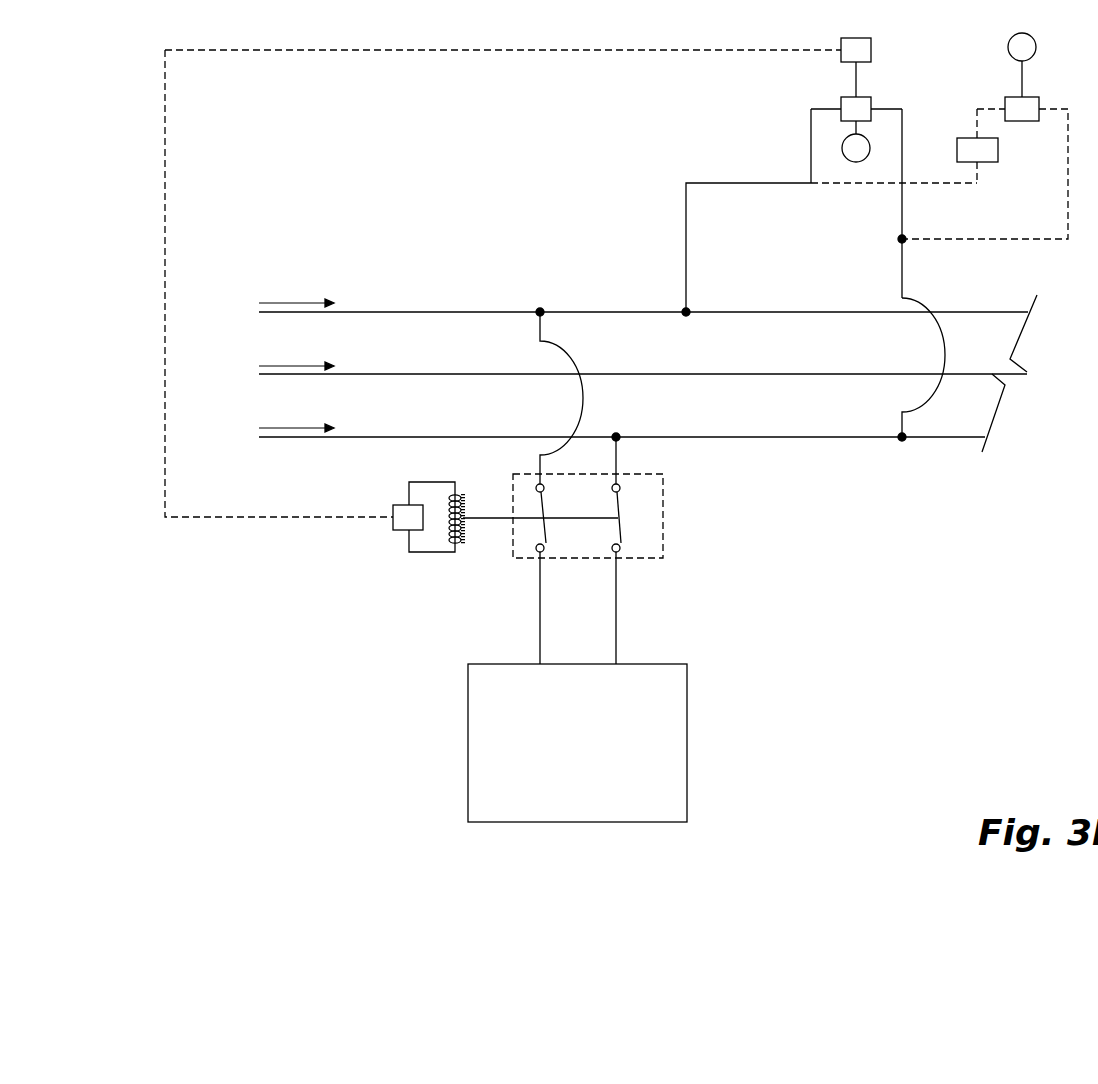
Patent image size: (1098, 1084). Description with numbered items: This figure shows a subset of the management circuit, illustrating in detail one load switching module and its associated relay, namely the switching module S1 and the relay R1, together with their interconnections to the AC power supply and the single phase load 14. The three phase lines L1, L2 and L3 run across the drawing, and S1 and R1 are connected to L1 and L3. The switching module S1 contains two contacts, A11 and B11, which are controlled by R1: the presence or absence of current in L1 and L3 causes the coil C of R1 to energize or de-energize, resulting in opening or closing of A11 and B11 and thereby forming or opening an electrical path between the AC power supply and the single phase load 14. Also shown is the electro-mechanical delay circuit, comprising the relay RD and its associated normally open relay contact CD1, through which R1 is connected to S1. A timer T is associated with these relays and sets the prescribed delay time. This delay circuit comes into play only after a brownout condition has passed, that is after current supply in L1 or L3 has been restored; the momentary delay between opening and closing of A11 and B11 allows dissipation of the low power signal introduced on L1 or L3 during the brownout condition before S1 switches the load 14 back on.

The phase line L1 is at (631, 305).
The phase line L2 is at (630, 367).
The phase line L3 is at (609, 430).
The switching module S1 is at (407, 578).
The relay R1 is at (647, 324).
The timer T is at (936, 108).
The relay RD is at (983, 170).
The normally open relay contact CD1 is at (904, 146).
The coil C is at (463, 510).
The contact A11 is at (545, 530).
The contact B11 is at (620, 520).
The single phase load 14 is at (563, 756).